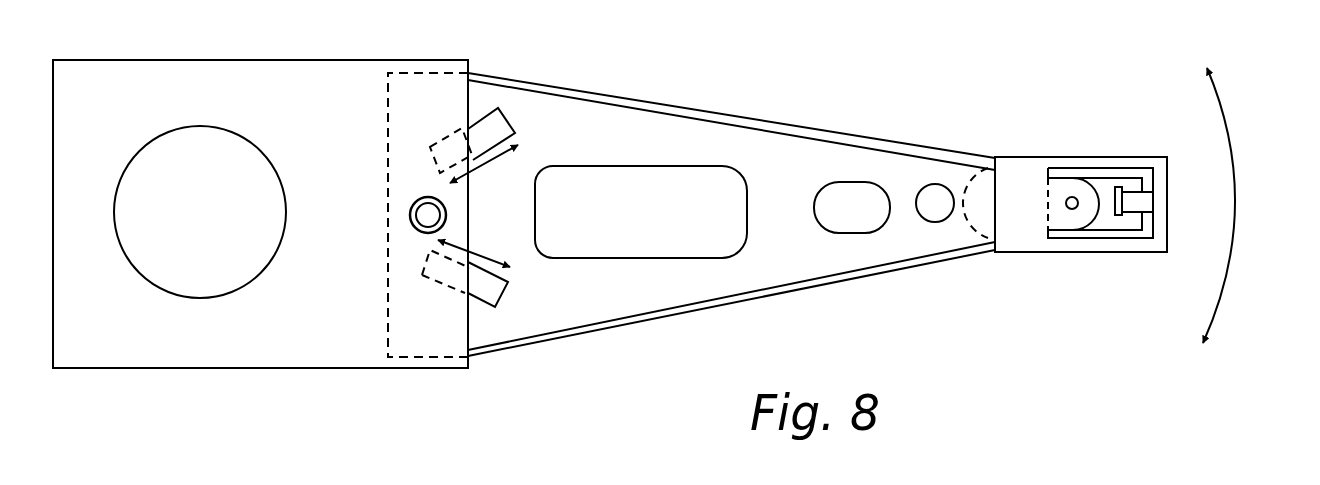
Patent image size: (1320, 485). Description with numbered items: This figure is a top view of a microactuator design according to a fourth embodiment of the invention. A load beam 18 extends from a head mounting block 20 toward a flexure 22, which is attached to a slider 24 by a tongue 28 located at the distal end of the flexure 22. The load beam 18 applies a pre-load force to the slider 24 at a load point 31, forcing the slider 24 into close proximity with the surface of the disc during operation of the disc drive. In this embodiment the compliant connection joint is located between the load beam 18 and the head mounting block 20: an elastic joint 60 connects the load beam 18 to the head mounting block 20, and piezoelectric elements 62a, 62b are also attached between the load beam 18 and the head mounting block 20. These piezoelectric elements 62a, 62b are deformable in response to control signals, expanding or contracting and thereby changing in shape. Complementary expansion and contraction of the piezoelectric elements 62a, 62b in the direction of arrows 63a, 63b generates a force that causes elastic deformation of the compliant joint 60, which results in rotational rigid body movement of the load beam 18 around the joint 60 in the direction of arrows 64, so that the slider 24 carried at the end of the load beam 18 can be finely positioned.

The load beam 18 is at (750, 115).
The head mounting block 20 is at (300, 60).
The flexure 22 is at (1020, 157).
The slider 24 is at (1087, 177).
The tongue 28 is at (1135, 200).
The load point 31 is at (1077, 212).
The elastic joint 60 is at (412, 204).
The piezoelectric element 62a is at (513, 113).
The piezoelectric element 62b is at (505, 300).
The arrow 63a is at (490, 165).
The arrow 63b is at (478, 254).
The arrows 64 is at (1238, 152).